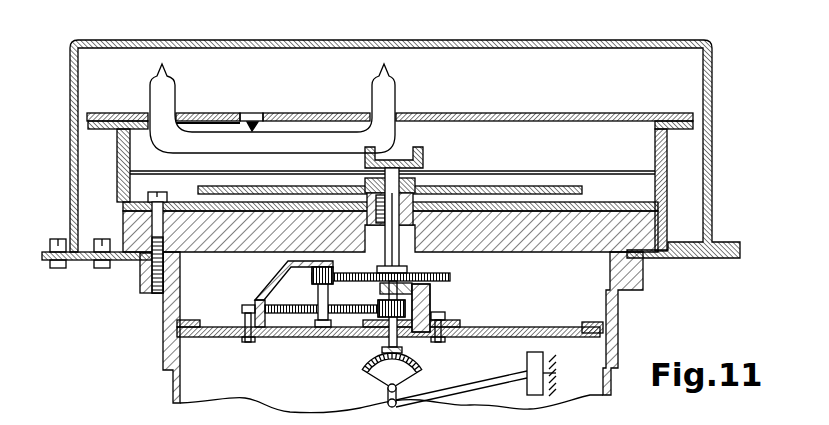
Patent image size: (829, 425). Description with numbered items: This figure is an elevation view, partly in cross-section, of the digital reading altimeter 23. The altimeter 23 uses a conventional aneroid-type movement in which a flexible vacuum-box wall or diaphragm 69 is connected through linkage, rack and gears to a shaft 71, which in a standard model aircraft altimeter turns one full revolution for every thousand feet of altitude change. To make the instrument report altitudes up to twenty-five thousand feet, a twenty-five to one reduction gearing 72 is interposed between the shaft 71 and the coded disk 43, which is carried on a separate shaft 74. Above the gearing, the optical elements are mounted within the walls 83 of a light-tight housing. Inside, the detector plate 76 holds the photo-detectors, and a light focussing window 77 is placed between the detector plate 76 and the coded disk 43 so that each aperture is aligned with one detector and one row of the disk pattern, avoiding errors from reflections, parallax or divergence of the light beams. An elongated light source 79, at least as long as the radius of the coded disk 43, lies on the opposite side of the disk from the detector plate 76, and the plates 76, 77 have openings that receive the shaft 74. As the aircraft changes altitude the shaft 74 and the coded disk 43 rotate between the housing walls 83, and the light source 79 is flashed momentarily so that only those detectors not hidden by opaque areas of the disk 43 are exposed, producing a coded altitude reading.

The walls 83 is at (167, 40).
The altimeter 23 is at (70, 180).
The light source 79 is at (290, 140).
The coded disk 43 is at (543, 177).
The light focussing window 77 is at (607, 202).
The detector plate 76 is at (550, 248).
The shaft 74 is at (393, 257).
The reduction gearing 72 is at (433, 295).
The shaft 71 is at (400, 345).
The diaphragm 69 is at (527, 371).